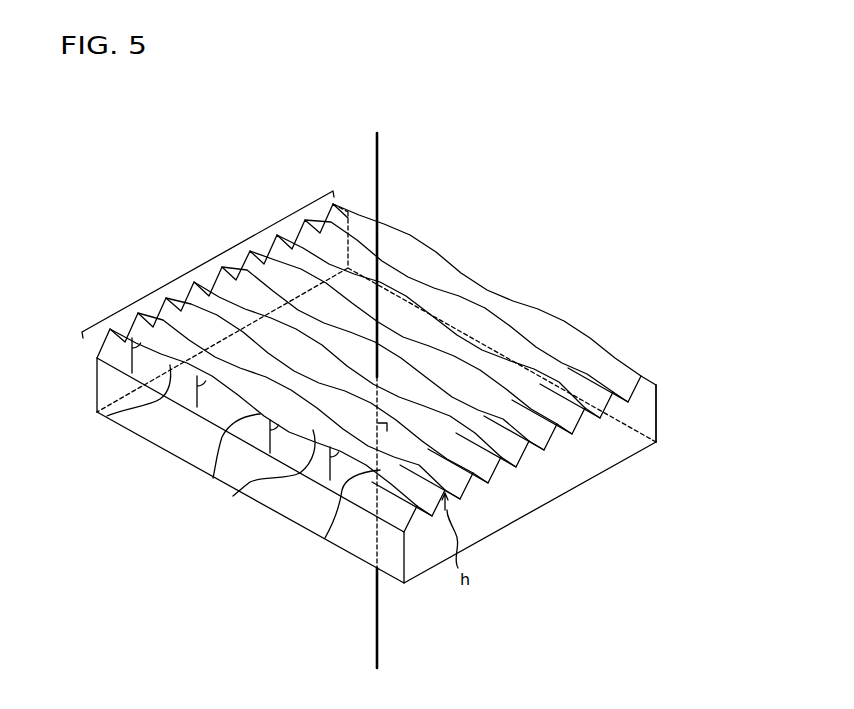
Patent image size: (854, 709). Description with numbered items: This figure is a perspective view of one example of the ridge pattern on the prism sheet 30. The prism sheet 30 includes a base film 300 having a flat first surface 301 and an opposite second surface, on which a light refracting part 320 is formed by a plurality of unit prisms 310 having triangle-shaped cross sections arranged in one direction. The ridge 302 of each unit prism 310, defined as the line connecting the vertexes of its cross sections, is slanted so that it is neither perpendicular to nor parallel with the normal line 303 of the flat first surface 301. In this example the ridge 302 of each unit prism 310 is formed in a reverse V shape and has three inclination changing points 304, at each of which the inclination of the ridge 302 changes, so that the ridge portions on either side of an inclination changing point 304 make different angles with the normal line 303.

The prism sheet 30 is at (546, 226).
The base film 300 is at (538, 492).
The flat first surface 301 is at (349, 555).
The ridge 302 is at (607, 352).
The normal line 303 is at (380, 150).
The inclination changing point 304 is at (413, 237).
The unit prism 310 is at (657, 385).
The light refracting part 320 is at (208, 264).